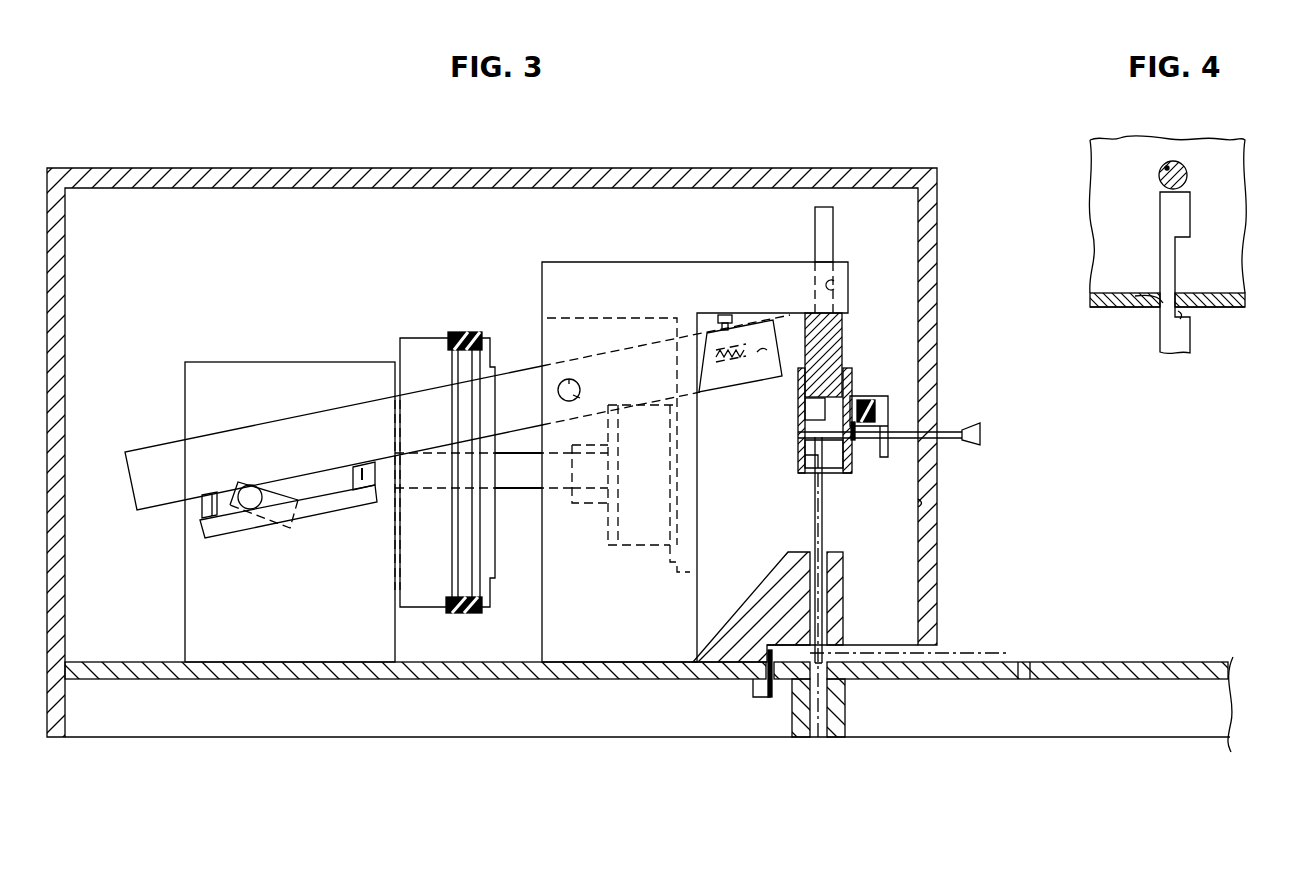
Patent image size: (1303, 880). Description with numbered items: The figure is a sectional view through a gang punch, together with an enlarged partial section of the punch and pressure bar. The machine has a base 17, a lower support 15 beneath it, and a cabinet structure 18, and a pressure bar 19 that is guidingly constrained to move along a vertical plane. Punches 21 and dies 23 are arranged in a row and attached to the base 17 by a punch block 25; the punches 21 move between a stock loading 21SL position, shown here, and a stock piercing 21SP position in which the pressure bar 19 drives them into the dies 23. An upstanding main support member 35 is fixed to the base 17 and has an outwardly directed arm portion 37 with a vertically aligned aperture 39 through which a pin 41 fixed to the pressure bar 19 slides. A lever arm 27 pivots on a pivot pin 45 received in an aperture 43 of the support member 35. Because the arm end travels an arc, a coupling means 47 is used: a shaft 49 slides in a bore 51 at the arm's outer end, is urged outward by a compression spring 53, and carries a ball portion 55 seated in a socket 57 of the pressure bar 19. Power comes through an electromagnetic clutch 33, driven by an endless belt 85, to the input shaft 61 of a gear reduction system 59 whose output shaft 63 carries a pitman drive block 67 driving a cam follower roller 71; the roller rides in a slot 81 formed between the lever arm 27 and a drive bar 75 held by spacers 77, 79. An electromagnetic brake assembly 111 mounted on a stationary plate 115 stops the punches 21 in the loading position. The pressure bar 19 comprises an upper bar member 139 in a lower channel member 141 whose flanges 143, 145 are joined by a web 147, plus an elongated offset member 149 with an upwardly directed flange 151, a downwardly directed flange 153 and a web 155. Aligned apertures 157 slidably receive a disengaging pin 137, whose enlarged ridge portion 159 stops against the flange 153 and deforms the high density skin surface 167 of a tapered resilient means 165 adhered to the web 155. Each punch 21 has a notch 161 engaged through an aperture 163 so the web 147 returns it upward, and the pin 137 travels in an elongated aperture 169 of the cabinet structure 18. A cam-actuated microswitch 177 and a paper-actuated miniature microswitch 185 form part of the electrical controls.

In FIG. 3, the base plate 15 is at (1020, 679).
In FIG. 3, the base 17 is at (557, 672).
In FIG. 3, the cabinet structure 18 is at (510, 180).
In FIG. 3, the pressure bar 19 is at (845, 355).
In FIG. 4, the punch 21 is at (1170, 275).
In FIG. 3, the stock loading position 21SL is at (822, 530).
In FIG. 3, the stock piercing position 21SP is at (962, 649).
In FIG. 3, the die 23 is at (830, 683).
In FIG. 3, the punch block 25 is at (775, 600).
In FIG. 3, the lever arm 27 is at (322, 432).
In FIG. 3, the electromagnetic clutch 33 is at (437, 600).
In FIG. 3, the main support member 35 is at (640, 283).
In FIG. 3, the arm portion 37 is at (778, 270).
In FIG. 3, the aperture 39 is at (836, 279).
In FIG. 3, the pin 41 is at (822, 225).
In FIG. 3, the aperture 43 is at (569, 379).
In FIG. 3, the pivot pin 45 is at (582, 380).
In FIG. 3, the coupling means 47 is at (782, 335).
In FIG. 3, the shaft 49 is at (793, 345).
In FIG. 3, the bore 51 is at (760, 352).
In FIG. 3, the compression spring 53 is at (720, 330).
In FIG. 3, the ball portion 55 is at (848, 326).
In FIG. 3, the socket 57 is at (838, 358).
In FIG. 3, the gear reduction system 59 is at (278, 614).
In FIG. 3, the input shaft 61 is at (524, 478).
In FIG. 3, the output shaft 63 is at (278, 533).
In FIG. 3, the pitman drive block 67 is at (258, 490).
In FIG. 3, the cam follower roller 71 is at (380, 460).
In FIG. 3, the drive bar 75 is at (352, 503).
In FIG. 3, the spacer 77 is at (200, 508).
In FIG. 3, the spacer 79 is at (366, 465).
In FIG. 3, the slot 81 is at (325, 490).
In FIG. 3, the endless belt 85 is at (468, 332).
In FIG. 3, the electromagnetic brake assembly 111 is at (635, 520).
In FIG. 3, the stationary plate 115 is at (685, 555).
In FIG. 3, the disengaging pin 137 is at (980, 433).
In FIG. 4, the disengaging pin 137 is at (1182, 165).
In FIG. 3, the upper bar member 139 is at (850, 378).
In FIG. 3, the lower channel member 141 is at (868, 462).
In FIG. 4, the lower channel member 141 is at (1115, 213).
In FIG. 3, the flange 143 is at (798, 430).
In FIG. 4, the flange 143 is at (1225, 180).
In FIG. 3, the flange 145 is at (870, 398).
In FIG. 3, the web 147 is at (874, 474).
In FIG. 4, the web 147 is at (1225, 300).
In FIG. 3, the elongated offset member 149 is at (882, 452).
In FIG. 3, the upwardly directed flange 151 is at (843, 388).
In FIG. 3, the downwardly directed flange 153 is at (890, 415).
In FIG. 3, the web 155 is at (882, 408).
In FIG. 3, the aperture 157 is at (798, 455).
In FIG. 4, the aperture 157 is at (1167, 165).
In FIG. 3, the enlarged ridge portion 159 is at (862, 470).
In FIG. 4, the notch 161 is at (1185, 312).
In FIG. 4, the aperture 163 is at (1135, 296).
In FIG. 3, the resilient means 165 is at (858, 448).
In FIG. 3, the high density skin surface 167 is at (862, 458).
In FIG. 3, the elongated aperture 169 is at (921, 503).
In FIG. 3, the cam-actuated microswitch 177 is at (727, 313).
In FIG. 3, the miniature microswitch 185 is at (762, 698).